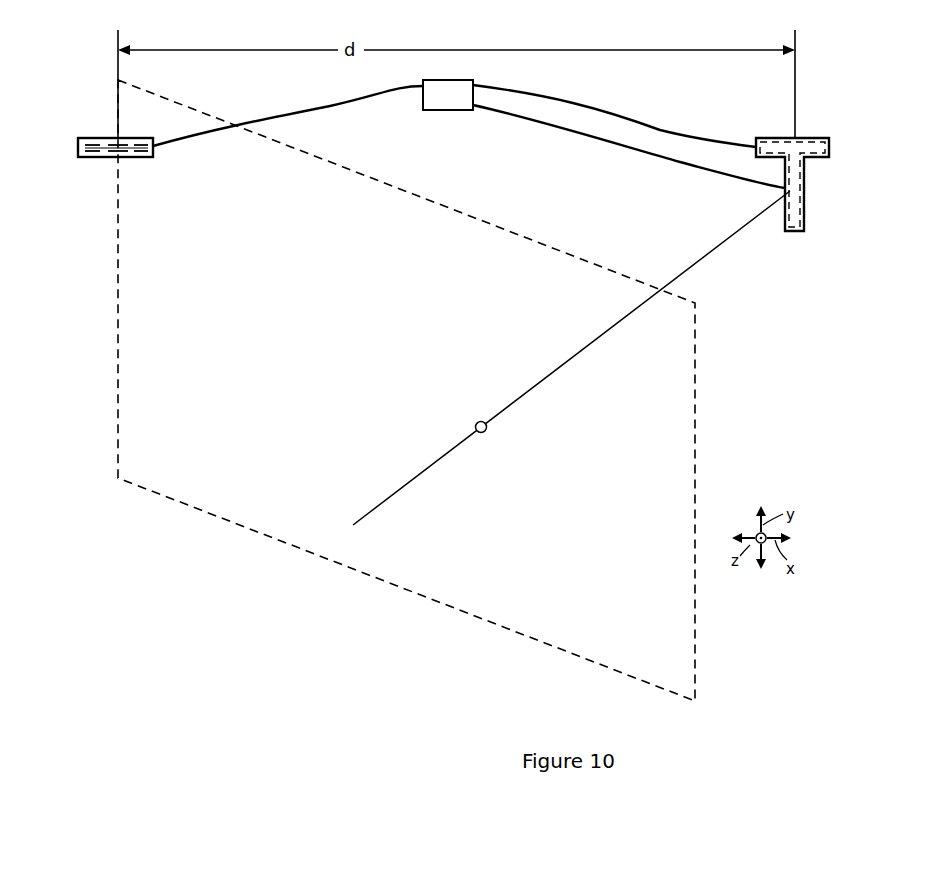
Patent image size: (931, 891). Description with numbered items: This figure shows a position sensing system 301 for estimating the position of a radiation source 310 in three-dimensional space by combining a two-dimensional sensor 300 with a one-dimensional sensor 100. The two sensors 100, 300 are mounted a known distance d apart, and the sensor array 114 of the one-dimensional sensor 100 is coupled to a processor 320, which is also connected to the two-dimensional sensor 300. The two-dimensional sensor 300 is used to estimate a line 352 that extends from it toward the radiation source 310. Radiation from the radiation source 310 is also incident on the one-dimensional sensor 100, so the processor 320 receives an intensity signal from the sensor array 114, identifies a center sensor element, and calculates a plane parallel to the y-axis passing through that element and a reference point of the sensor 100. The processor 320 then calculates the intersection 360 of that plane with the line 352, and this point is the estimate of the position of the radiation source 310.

The one-dimensional sensor 100 is at (87, 158).
The sensor array 114 is at (92, 140).
The processor 320 is at (469, 134).
The two-dimensional sensor 300 is at (805, 179).
The line 352 is at (700, 263).
The radiation source 310 is at (510, 455).
The intersection 360 is at (485, 433).
The position sensing system 301 is at (160, 527).